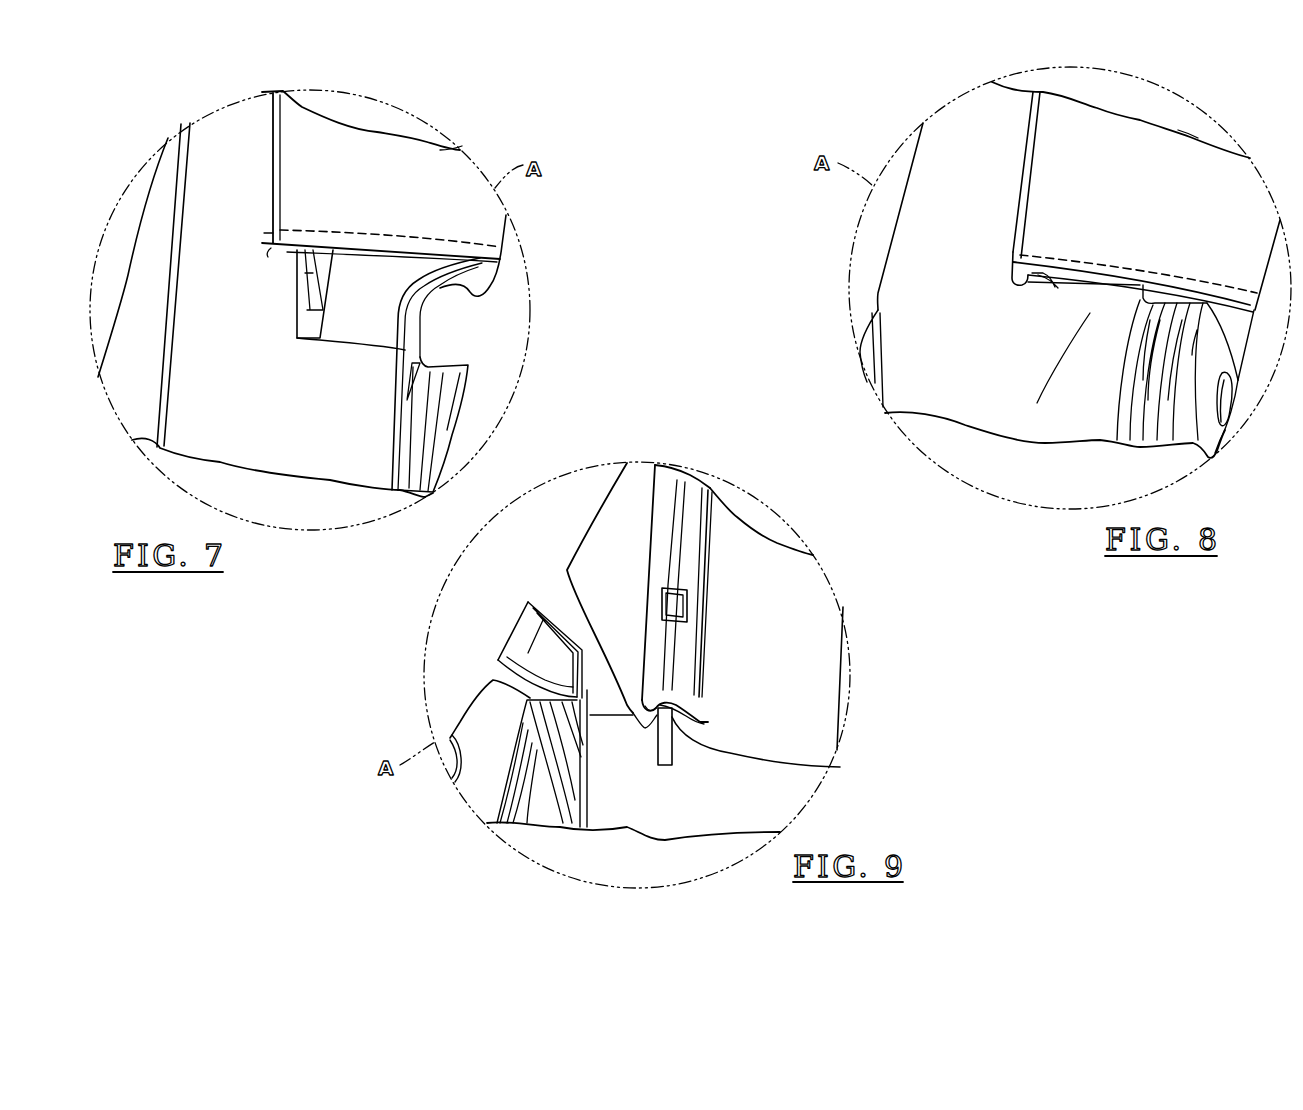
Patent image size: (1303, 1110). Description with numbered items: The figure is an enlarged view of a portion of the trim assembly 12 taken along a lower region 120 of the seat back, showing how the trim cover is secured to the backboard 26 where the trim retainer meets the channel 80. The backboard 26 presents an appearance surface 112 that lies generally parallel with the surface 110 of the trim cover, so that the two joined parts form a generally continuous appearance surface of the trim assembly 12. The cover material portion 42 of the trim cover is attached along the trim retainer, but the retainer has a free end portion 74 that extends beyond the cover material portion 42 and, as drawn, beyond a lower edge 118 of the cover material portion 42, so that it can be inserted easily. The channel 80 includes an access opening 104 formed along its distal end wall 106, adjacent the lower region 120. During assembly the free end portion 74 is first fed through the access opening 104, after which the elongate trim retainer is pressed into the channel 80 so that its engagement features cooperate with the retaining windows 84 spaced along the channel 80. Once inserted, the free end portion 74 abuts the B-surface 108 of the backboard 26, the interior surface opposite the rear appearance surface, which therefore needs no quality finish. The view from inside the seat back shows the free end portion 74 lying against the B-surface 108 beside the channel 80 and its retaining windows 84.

In FIG. 7, the trim assembly 12 is at (372, 112).
In FIG. 7, the backboard 26 is at (230, 134).
In FIG. 8, the backboard 26 is at (952, 190).
In FIG. 9, the backboard 26 is at (727, 548).
In FIG. 7, the cover material portion 42 is at (433, 158).
In FIG. 8, the cover material portion 42 is at (1168, 138).
In FIG. 7, the free end portion 74 is at (303, 285).
In FIG. 9, the free end portion 74 is at (662, 757).
In FIG. 9, the channel 80 is at (660, 500).
In FIG. 9, the retaining windows 84 is at (675, 608).
In FIG. 9, the access opening 104 is at (528, 602).
In FIG. 9, the distal end wall 106 is at (840, 767).
In FIG. 9, the B-surface 108 is at (788, 712).
In FIG. 7, the surface 110 is at (393, 200).
In FIG. 8, the surface 110 is at (1174, 216).
In FIG. 7, the appearance surface 112 is at (254, 334).
In FIG. 8, the appearance surface 112 is at (981, 244).
In FIG. 8, the lower edge 118 is at (1097, 282).
In FIG. 7, the lower region 120 is at (280, 433).
In FIG. 8, the lower region 120 is at (985, 398).